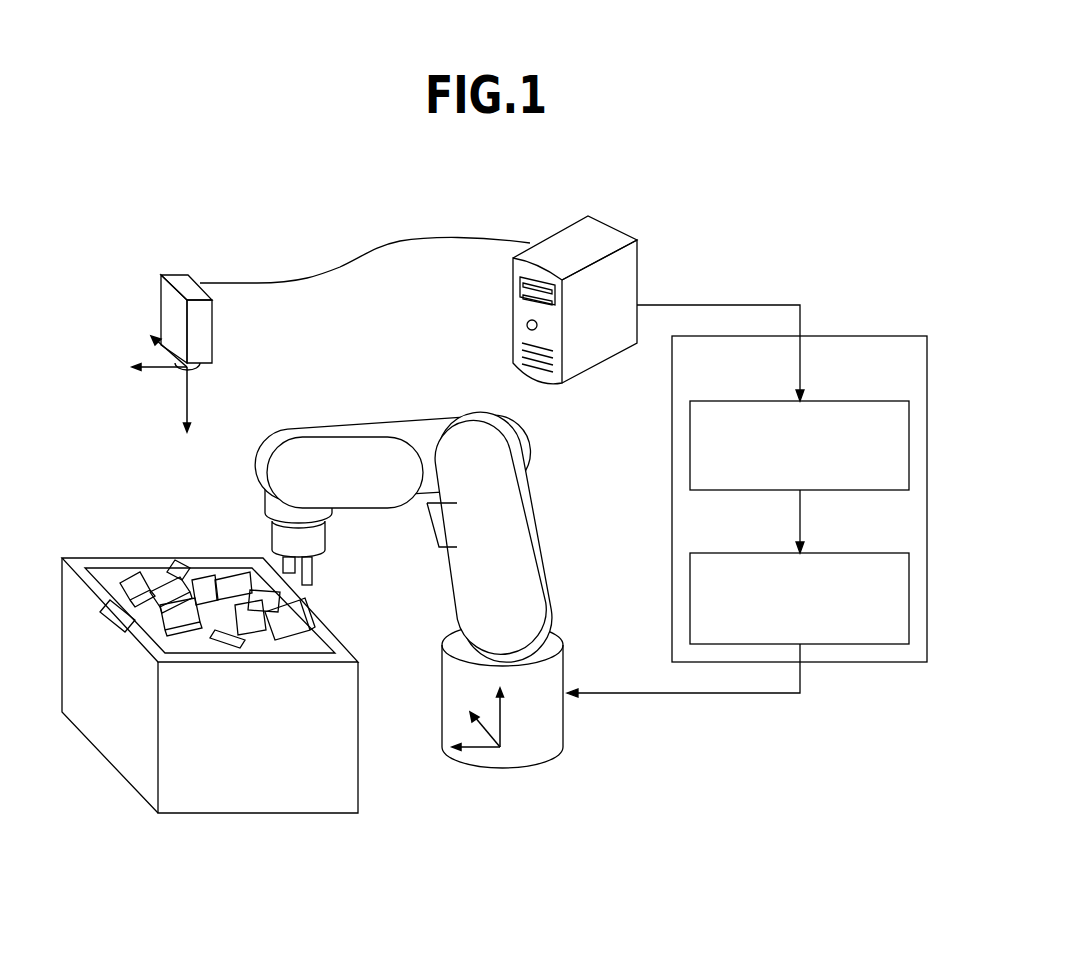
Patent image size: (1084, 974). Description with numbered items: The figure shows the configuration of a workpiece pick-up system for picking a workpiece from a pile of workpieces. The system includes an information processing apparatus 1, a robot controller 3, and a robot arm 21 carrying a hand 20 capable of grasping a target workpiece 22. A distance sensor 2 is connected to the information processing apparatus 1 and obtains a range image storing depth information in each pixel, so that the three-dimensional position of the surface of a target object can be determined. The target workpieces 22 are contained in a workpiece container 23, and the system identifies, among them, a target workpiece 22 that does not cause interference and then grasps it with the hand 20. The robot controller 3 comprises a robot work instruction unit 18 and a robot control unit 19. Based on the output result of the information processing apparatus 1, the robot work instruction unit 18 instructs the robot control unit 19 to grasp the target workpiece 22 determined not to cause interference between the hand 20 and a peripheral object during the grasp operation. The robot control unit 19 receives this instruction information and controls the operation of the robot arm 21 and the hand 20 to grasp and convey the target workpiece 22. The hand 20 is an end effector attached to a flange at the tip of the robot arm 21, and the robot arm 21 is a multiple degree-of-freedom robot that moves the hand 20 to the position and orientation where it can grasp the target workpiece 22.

The information processing apparatus 1 is at (610, 226).
The distance sensor 2 is at (161, 292).
The robot controller 3 is at (867, 335).
The robot work instruction unit 18 is at (852, 400).
The robot control unit 19 is at (852, 552).
The hand 20 is at (313, 573).
The robot arm 21 is at (517, 767).
The target workpiece 22 is at (130, 573).
The workpiece container 23 is at (97, 735).